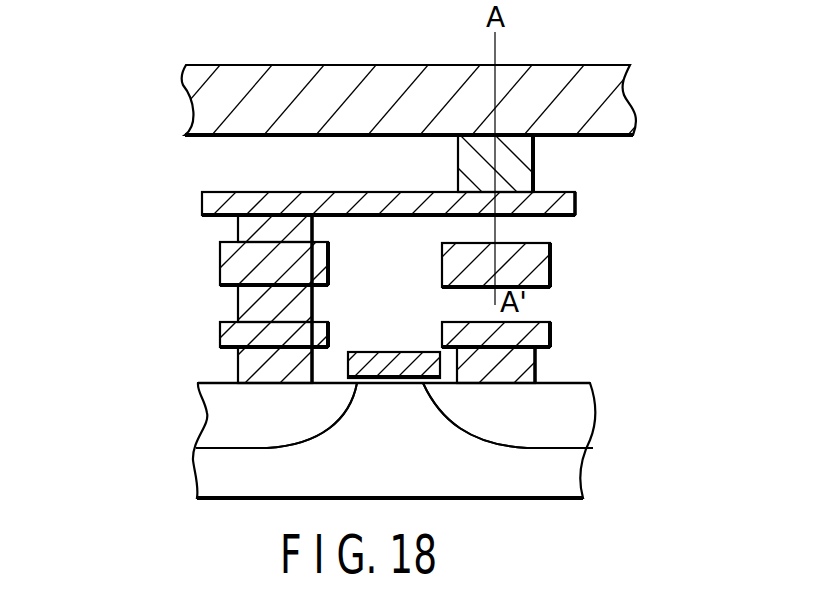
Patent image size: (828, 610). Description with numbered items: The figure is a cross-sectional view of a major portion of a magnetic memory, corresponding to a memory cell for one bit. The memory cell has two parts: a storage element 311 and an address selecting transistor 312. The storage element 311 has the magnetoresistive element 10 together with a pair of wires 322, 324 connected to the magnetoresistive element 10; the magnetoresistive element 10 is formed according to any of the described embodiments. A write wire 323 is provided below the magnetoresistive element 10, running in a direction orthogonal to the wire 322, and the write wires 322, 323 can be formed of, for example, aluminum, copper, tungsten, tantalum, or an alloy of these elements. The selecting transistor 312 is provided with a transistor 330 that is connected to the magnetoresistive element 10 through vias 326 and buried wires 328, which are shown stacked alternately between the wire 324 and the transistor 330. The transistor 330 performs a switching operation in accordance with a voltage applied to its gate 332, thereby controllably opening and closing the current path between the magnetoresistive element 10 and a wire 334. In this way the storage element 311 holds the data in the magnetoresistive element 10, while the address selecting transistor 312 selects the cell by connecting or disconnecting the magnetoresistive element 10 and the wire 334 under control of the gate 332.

The storage element 311 is at (107, 62).
The address selecting transistor 312 is at (108, 225).
The wire 322 is at (623, 92).
The magnetoresistive element 10 is at (520, 153).
The wire 324 is at (577, 201).
The write wire 323 is at (542, 265).
The via 326 is at (238, 232).
The buried wire 328 is at (248, 272).
The wire 334 is at (530, 359).
The gate 332 is at (378, 384).
The transistor 330 is at (408, 394).